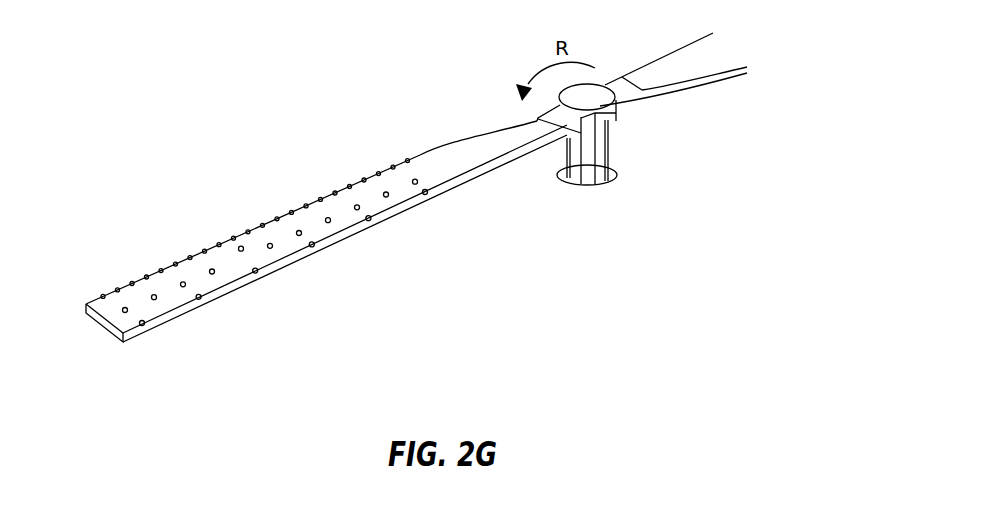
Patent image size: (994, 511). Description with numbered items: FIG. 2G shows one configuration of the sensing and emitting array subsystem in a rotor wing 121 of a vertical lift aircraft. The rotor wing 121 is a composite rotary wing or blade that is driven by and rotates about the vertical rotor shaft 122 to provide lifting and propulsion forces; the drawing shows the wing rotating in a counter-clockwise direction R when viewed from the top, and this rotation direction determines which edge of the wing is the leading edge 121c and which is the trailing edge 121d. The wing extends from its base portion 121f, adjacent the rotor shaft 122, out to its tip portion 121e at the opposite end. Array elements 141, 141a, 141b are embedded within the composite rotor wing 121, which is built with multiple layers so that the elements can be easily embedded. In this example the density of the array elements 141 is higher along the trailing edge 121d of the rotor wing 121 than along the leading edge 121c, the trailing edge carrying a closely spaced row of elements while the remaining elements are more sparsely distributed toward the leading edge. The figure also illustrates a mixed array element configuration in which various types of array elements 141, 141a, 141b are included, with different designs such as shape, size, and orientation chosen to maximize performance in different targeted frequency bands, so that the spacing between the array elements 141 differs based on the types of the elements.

The rotor wing 121 is at (453, 170).
The leading edge 121c is at (292, 263).
The trailing edge 121d is at (423, 153).
The tip portion 121e is at (102, 325).
The base portion 121f is at (500, 146).
The rotor shaft 122 is at (590, 148).
The array elements 141 is at (264, 231).
The first holes 141a is at (255, 229).
The second holes 141b is at (183, 285).